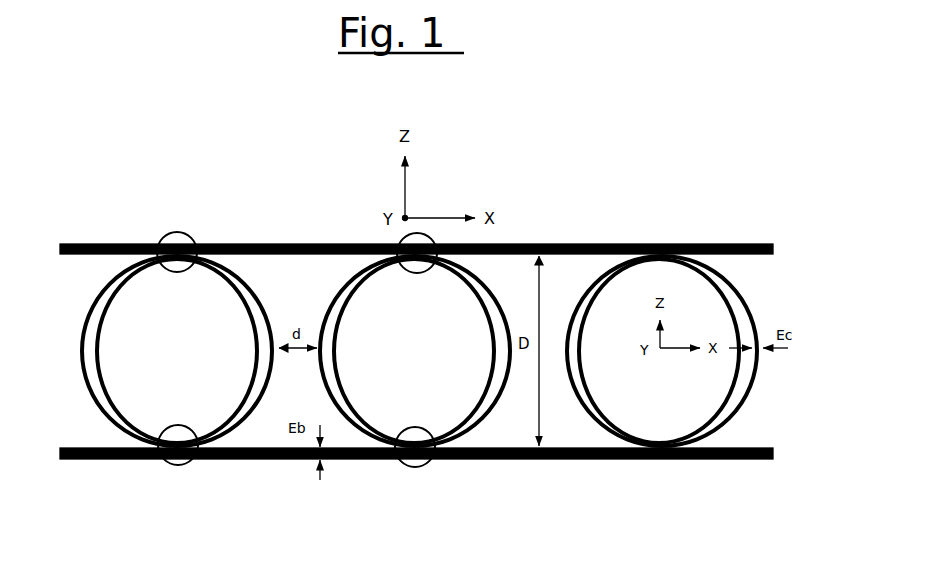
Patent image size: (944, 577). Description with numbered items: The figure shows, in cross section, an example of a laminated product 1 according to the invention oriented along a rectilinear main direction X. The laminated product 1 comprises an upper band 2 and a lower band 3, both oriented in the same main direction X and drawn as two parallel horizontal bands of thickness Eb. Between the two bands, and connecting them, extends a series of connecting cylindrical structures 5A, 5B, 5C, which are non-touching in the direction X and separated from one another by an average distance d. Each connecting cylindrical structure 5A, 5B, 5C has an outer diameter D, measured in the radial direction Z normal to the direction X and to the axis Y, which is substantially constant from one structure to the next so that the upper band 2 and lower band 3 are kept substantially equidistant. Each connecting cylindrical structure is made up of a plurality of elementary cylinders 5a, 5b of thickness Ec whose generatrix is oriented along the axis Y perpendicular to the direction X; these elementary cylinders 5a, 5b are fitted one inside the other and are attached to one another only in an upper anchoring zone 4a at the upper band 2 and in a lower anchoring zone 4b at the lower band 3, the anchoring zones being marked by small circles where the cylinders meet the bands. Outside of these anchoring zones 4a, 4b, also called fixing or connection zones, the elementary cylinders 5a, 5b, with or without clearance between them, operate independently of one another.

The laminated product 1 is at (571, 207).
The upper band 2 is at (87, 250).
The lower band 3 is at (108, 455).
The upper anchoring zone 4a is at (192, 277).
The lower anchoring zone 4b is at (184, 420).
The elementary cylinder 5a is at (82, 332).
The elementary cylinder 5b is at (98, 374).
The connecting cylindrical structure 5A is at (150, 389).
The connecting cylindrical structure 5B is at (472, 435).
The connecting cylindrical structure 5C is at (716, 434).